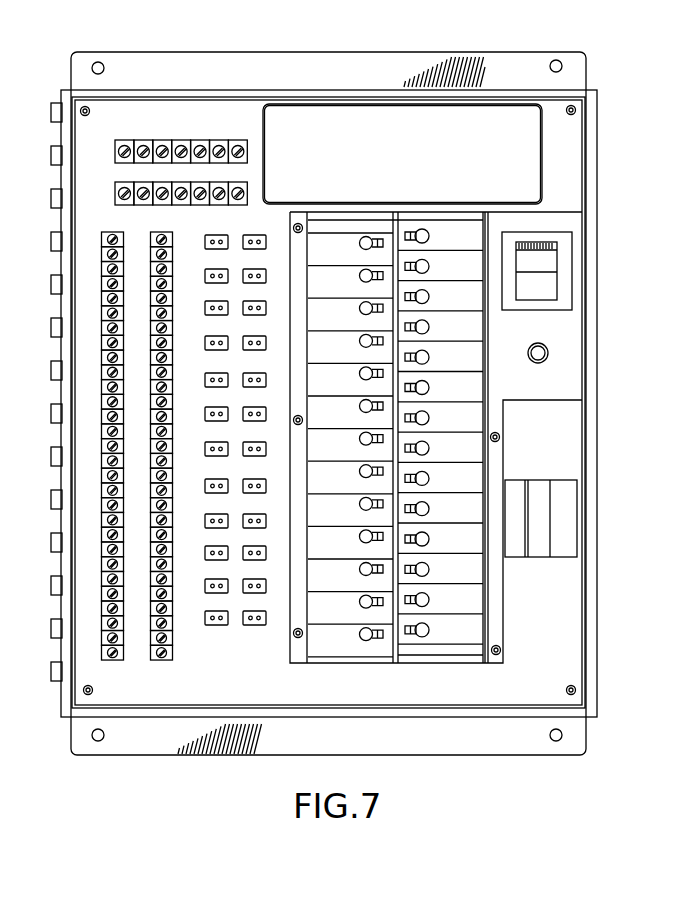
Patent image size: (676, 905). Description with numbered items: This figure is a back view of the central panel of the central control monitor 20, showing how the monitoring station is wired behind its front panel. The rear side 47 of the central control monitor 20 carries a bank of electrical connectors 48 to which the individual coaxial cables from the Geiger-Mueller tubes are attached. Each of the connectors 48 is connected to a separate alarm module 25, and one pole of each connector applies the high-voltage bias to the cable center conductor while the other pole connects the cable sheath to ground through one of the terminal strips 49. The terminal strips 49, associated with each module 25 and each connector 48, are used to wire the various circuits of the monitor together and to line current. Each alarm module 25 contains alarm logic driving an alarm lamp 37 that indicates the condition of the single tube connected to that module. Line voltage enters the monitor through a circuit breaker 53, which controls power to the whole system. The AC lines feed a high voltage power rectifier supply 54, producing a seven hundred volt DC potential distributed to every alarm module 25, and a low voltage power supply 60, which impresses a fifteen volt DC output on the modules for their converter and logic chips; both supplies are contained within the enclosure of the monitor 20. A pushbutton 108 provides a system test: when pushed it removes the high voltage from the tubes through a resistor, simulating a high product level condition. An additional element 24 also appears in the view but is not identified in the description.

The central control monitor 20 is at (87, 178).
The front cover 24 is at (87, 661).
The alarm module 25 is at (421, 453).
The alarm lamp 37 is at (362, 636).
The rear side 47 is at (560, 173).
The electrical connectors 48 is at (252, 236).
The terminal strips 49 is at (116, 191).
The circuit breaker 53 is at (565, 298).
The high voltage power rectifier supply 54 is at (540, 547).
The low voltage power supply 60 is at (403, 157).
The pushbutton 108 is at (552, 353).